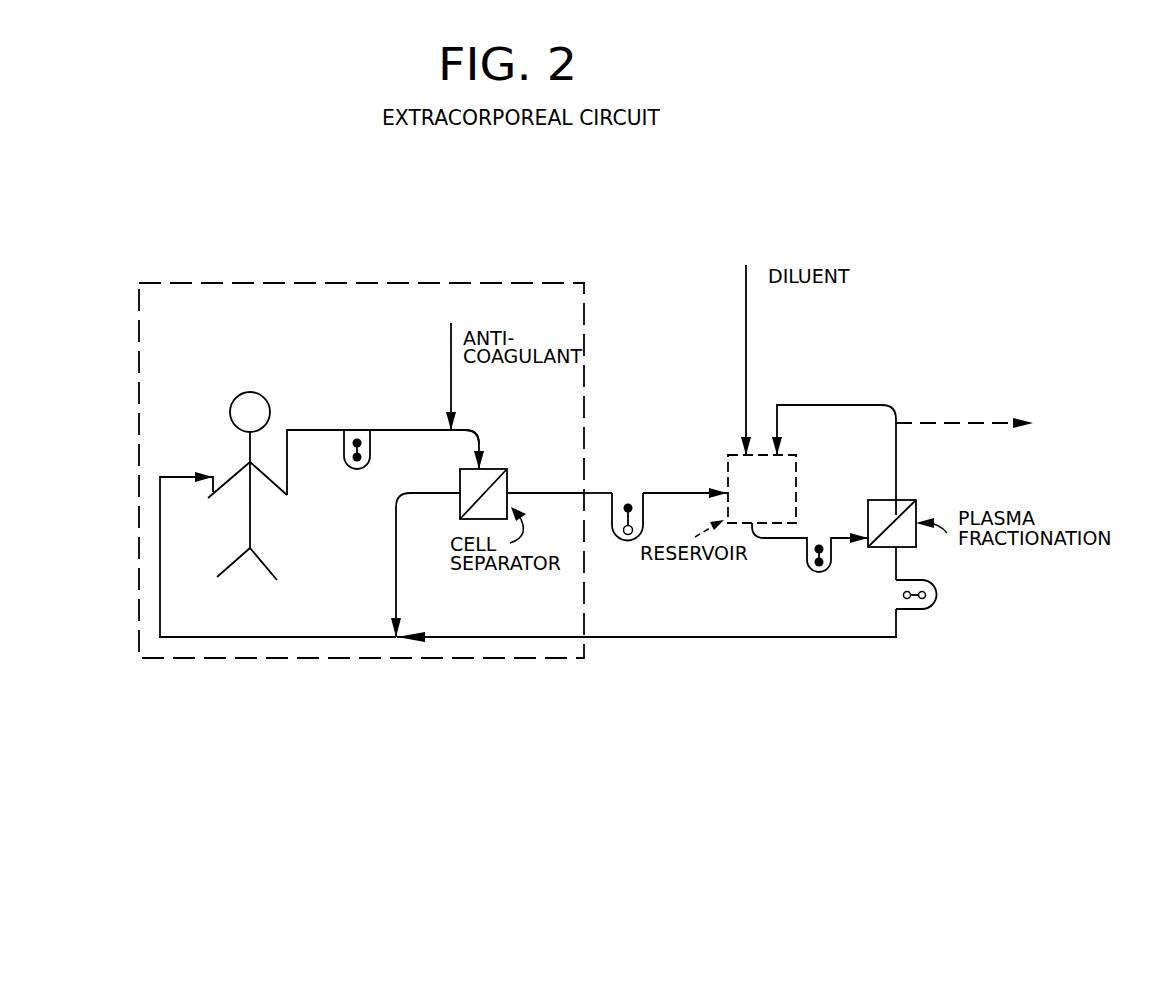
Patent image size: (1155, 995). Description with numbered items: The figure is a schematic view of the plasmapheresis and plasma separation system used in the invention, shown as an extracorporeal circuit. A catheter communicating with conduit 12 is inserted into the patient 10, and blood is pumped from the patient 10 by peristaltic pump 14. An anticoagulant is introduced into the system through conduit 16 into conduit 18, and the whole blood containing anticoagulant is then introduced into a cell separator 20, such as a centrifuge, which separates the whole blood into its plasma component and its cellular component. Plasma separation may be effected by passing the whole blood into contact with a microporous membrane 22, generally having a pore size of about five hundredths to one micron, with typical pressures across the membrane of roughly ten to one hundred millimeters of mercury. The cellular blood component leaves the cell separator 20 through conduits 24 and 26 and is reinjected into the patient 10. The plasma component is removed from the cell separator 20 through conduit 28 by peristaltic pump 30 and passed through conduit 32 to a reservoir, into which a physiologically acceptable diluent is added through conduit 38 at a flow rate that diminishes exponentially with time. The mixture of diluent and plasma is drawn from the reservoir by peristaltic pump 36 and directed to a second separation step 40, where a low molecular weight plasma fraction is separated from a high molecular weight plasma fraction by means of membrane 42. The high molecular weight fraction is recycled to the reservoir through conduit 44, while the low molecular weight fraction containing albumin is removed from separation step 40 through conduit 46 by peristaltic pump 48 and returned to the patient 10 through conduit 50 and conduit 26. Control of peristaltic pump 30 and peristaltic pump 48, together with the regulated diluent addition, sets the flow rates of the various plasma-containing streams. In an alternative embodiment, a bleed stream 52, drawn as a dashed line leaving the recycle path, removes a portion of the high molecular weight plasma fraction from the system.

The patient 10 is at (250, 522).
The conduit 12 is at (325, 430).
The peristaltic pump 14 is at (370, 446).
The conduit 16 is at (451, 360).
The conduit 18 is at (480, 442).
The cell separator 20 is at (508, 493).
The microporous membrane 22 is at (498, 472).
The conduit 24 is at (396, 572).
The conduit 26 is at (297, 637).
The conduit 28 is at (602, 493).
The peristaltic pump 30 is at (629, 503).
The conduit 32 is at (673, 493).
The peristaltic pump 36 is at (808, 572).
The conduit 38 is at (746, 352).
The second separation step 40 is at (918, 514).
The membrane 42 is at (897, 516).
The conduit 44 is at (853, 405).
The conduit 46 is at (897, 562).
The peristaltic pump 48 is at (937, 597).
The conduit 50 is at (693, 637).
The bleed stream 52 is at (937, 423).